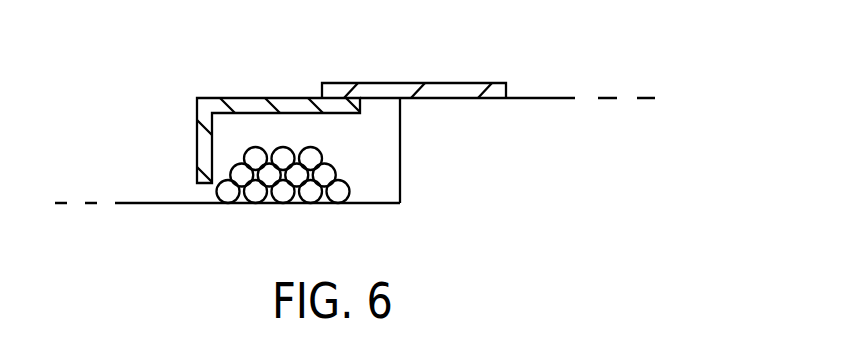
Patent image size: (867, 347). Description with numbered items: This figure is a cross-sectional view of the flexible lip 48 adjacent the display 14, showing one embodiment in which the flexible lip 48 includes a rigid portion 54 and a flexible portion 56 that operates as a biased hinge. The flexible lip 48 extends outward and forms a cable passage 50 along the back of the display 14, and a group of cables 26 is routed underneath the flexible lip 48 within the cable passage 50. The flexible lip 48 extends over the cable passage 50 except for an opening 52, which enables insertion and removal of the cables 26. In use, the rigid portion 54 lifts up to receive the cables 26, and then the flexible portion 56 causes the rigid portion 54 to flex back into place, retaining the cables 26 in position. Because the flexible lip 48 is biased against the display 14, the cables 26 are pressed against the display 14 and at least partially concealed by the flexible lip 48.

The display 14 is at (540, 97).
The cable 26 is at (345, 165).
The flexible lip 48 is at (196, 72).
The cable passage 50 is at (352, 133).
The opening 52 is at (203, 193).
The rigid portion 54 is at (271, 98).
The flexible portion 56 is at (423, 83).